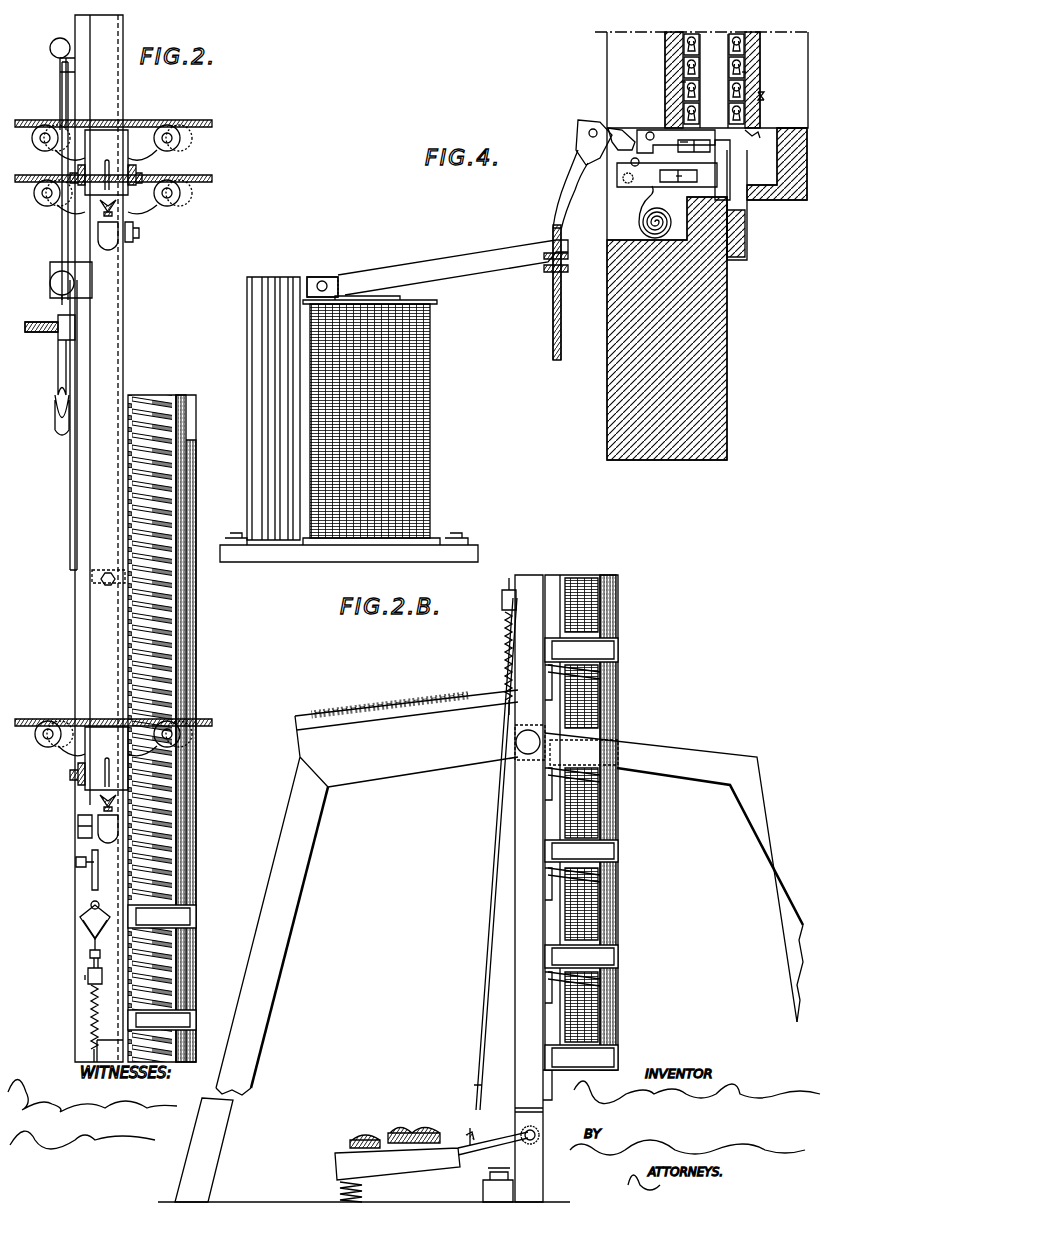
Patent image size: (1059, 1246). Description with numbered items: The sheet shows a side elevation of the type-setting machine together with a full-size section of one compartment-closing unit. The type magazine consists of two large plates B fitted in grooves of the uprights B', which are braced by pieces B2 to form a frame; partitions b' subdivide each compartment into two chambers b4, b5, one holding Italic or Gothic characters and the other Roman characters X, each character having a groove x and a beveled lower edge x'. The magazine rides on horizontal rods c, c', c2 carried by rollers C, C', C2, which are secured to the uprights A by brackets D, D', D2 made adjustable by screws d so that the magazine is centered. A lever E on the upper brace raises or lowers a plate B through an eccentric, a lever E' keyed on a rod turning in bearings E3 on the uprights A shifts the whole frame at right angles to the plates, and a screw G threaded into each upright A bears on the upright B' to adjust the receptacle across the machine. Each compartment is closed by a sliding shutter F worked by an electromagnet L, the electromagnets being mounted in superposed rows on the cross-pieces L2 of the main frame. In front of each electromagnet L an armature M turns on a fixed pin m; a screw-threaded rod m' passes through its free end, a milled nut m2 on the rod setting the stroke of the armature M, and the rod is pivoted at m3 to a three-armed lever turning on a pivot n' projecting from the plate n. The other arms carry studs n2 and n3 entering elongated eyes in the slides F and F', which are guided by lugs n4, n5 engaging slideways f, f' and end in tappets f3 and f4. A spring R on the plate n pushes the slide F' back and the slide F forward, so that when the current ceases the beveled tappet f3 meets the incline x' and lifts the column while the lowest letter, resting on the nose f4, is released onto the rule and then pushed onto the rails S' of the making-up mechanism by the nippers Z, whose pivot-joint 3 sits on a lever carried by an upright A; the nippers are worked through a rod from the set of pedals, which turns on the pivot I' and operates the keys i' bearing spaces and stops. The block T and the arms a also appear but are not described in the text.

In FIG. 2, the uprights A is at (99, 538).
In FIG. 2B, the uprights A is at (533, 888).
In FIG. 2, the plates B is at (74, 353).
In FIG. 4, the plates B is at (710, 80).
In FIG. 4, the uprights B' is at (700, 80).
In FIG. 2, the bracing pieces B2 is at (65, 425).
In FIG. 2, the rollers C is at (106, 200).
In FIG. 2, the rollers C' is at (105, 144).
In FIG. 2, the rollers C2 is at (109, 741).
In FIG. 2, the horizontal rod c is at (112, 178).
In FIG. 2, the horizontal rod c' is at (114, 123).
In FIG. 2, the horizontal rod c2 is at (115, 722).
In FIG. 2, the bracket D is at (122, 241).
In FIG. 2, the bracket D' is at (106, 162).
In FIG. 2, the bracket D2 is at (99, 758).
In FIG. 2, the adjusting screw d is at (102, 208).
In FIG. 2, the lever E is at (57, 84).
In FIG. 2, the lever E' is at (50, 375).
In FIG. 2, the bearings or brackets E3 is at (63, 283).
In FIG. 2, the screw G is at (108, 587).
In FIG. 2, the electromagnet L is at (192, 834).
In FIG. 4, the electromagnet L is at (349, 419).
In FIG. 2B, the electromagnet L is at (598, 606).
In FIG. 2, the cross-pieces L2 is at (162, 967).
In FIG. 2B, the cross-pieces L2 is at (581, 854).
In FIG. 2, the armature M is at (176, 604).
In FIG. 4, the armature M is at (437, 268).
In FIG. 2B, the armature M is at (600, 676).
In FIG. 4, the fixed pin m is at (322, 276).
In FIG. 4, the screw-threaded rod m' is at (570, 255).
In FIG. 4, the milled nut m2 is at (568, 262).
In FIG. 4, the pivot m3 is at (588, 134).
In FIG. 2, the block T is at (78, 830).
In FIG. 4, the block T is at (674, 294).
In FIG. 2, the nippers Z is at (88, 876).
In FIG. 2, the pivot-joint 3 is at (90, 902).
In FIG. 2B, the blade a is at (489, 946).
In FIG. 4, the partitions b' is at (714, 81).
In FIG. 4, the chamber b4 is at (691, 69).
In FIG. 4, the chamber b5 is at (737, 69).
In FIG. 4, the groove x is at (760, 71).
In FIG. 4, the beveled edge x' is at (664, 83).
In FIG. 4, the characters X is at (761, 97).
In FIG. 4, the plate n is at (621, 170).
In FIG. 4, the pivot n' is at (627, 162).
In FIG. 4, the stud n2 is at (647, 127).
In FIG. 4, the stud n3 is at (622, 180).
In FIG. 4, the lug n4 is at (680, 154).
In FIG. 4, the lug n5 is at (685, 185).
In FIG. 4, the spring R is at (644, 212).
In FIG. 4, the rails or rods S' is at (767, 194).
In FIG. 4, the sliding shutter F is at (676, 141).
In FIG. 4, the slide F' is at (667, 175).
In FIG. 4, the slideway f is at (694, 153).
In FIG. 4, the slideway f' is at (676, 182).
In FIG. 4, the tappet f3 is at (753, 137).
In FIG. 4, the tappet f4 is at (728, 170).
In FIG. 2B, the keys i' is at (431, 1157).
In FIG. 2B, the pivot I' is at (540, 1135).